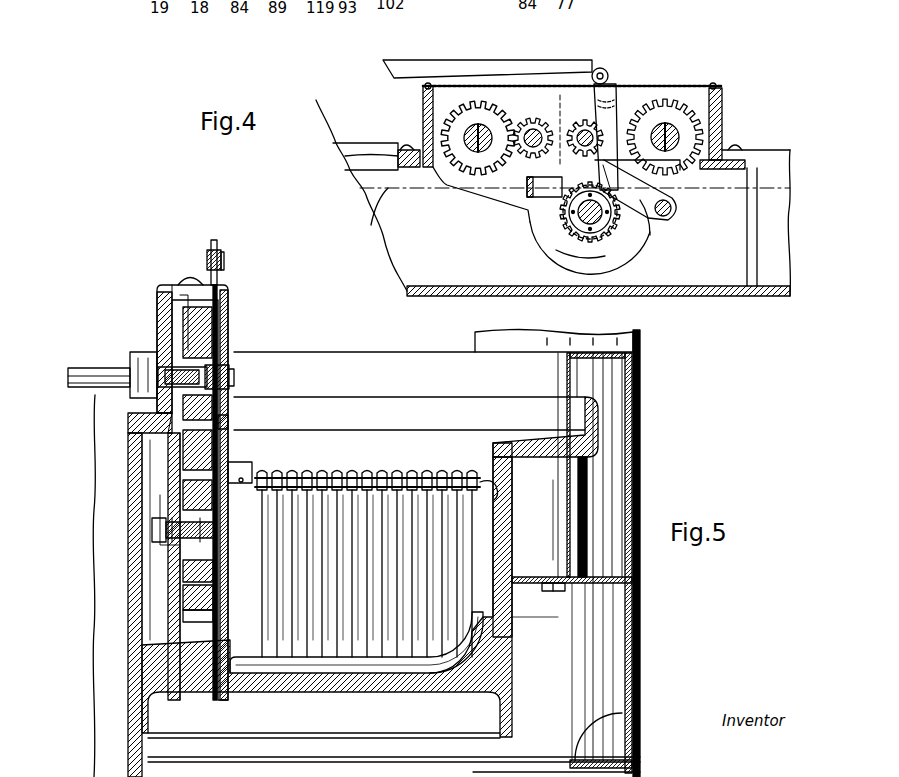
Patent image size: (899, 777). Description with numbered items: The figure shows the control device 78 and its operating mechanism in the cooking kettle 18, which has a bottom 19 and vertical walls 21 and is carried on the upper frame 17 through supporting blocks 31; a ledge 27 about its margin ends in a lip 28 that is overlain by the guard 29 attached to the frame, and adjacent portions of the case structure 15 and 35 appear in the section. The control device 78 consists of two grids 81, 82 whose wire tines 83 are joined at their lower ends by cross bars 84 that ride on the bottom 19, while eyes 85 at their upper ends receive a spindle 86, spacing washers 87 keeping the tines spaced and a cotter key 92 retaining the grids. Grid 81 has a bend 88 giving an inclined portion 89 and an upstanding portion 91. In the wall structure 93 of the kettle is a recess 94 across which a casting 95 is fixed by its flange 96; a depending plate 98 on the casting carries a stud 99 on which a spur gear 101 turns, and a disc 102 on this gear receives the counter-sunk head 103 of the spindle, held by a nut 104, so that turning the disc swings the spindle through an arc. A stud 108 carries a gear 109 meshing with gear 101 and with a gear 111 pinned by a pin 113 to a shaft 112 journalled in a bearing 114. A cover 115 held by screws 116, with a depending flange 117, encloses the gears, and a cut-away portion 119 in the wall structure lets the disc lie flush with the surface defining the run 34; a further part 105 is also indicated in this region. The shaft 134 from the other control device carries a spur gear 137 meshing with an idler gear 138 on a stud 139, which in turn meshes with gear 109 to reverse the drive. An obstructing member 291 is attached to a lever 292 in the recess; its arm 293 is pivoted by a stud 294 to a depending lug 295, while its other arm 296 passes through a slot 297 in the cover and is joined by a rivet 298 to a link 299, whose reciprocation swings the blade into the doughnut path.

In FIG. 5, the outer frame wall 15 is at (640, 373).
In FIG. 5, the upper frame 17 is at (585, 740).
In FIG. 4, the cooking kettle 18 is at (414, 290).
In FIG. 5, the cooking kettle 18 is at (128, 737).
In FIG. 4, the bottom 19 is at (760, 290).
In FIG. 5, the bottom 19 is at (378, 682).
In FIG. 5, the vertical walls 21 is at (512, 556).
In FIG. 5, the ledge 27 is at (590, 470).
In FIG. 5, the lip 28 is at (600, 414).
In FIG. 5, the guard 29 is at (565, 352).
In FIG. 5, the supporting blocks 31 is at (600, 512).
In FIG. 4, the run 34 is at (410, 264).
In FIG. 5, the run 34 is at (150, 648).
In FIG. 4, the side wall 35 is at (770, 234).
In FIG. 5, the side wall 35 is at (612, 610).
In FIG. 5, the control device 78 is at (436, 500).
In FIG. 5, the grid 81 is at (288, 630).
In FIG. 5, the grid 82 is at (262, 590).
In FIG. 5, the wire tines 83 is at (344, 600).
In FIG. 5, the cross bars 84 is at (425, 663).
In FIG. 5, the eyes 85 is at (390, 470).
In FIG. 5, the spindle 86 is at (500, 484).
In FIG. 5, the spacing washers 87 is at (422, 470).
In FIG. 5, the bend 88 is at (218, 668).
In FIG. 5, the inclined portion 89 is at (440, 590).
In FIG. 5, the upstanding portion 91 is at (448, 500).
In FIG. 5, the cotter key 92 is at (476, 470).
In FIG. 5, the wall structure 93 is at (130, 573).
In FIG. 4, the recess 94 is at (622, 236).
In FIG. 5, the recess 94 is at (150, 474).
In FIG. 4, the casting 95 is at (423, 116).
In FIG. 5, the casting 95 is at (157, 308).
In FIG. 4, the flange 96 is at (345, 158).
In FIG. 5, the flange 96 is at (128, 421).
In FIG. 4, the depending plate 98 is at (615, 190).
In FIG. 5, the depending plate 98 is at (170, 488).
In FIG. 4, the stud 99 is at (582, 216).
In FIG. 5, the stud 99 is at (160, 528).
In FIG. 4, the spur gear 101 is at (616, 232).
In FIG. 5, the spur gear 101 is at (185, 596).
In FIG. 5, the disc 102 is at (232, 424).
In FIG. 5, the counter-sunk head 103 is at (236, 446).
In FIG. 5, the nut 104 is at (252, 468).
In FIG. 4, the lever 105 is at (372, 222).
In FIG. 5, the lever 105 is at (496, 500).
In FIG. 4, the stud 108 is at (583, 130).
In FIG. 5, the stud 108 is at (230, 341).
In FIG. 4, the gear 109 is at (574, 108).
In FIG. 5, the gear 109 is at (208, 300).
In FIG. 4, the gear 111 is at (722, 140).
In FIG. 5, the gear 111 is at (212, 374).
In FIG. 4, the shaft 112 is at (690, 138).
In FIG. 5, the shaft 112 is at (75, 368).
In FIG. 4, the pin 113 is at (660, 92).
In FIG. 5, the bearing 114 is at (138, 352).
In FIG. 4, the cover 115 is at (470, 86).
In FIG. 5, the cover 115 is at (168, 285).
In FIG. 4, the screws 116 is at (424, 84).
In FIG. 5, the screws 116 is at (190, 277).
In FIG. 5, the depending flange 117 is at (232, 330).
In FIG. 4, the cut-away portion 119 is at (565, 268).
In FIG. 4, the shaft 134 is at (465, 136).
In FIG. 4, the spur gear 137 is at (462, 160).
In FIG. 4, the idler gear 138 is at (532, 116).
In FIG. 4, the stud 139 is at (528, 150).
In FIG. 4, the obstructing member 291 is at (532, 190).
In FIG. 4, the lever 292 is at (612, 135).
In FIG. 5, the lever 292 is at (222, 322).
In FIG. 4, the arm 293 is at (656, 232).
In FIG. 4, the stud 294 is at (670, 212).
In FIG. 4, the depending lug 295 is at (668, 200).
In FIG. 4, the arm 296 is at (612, 92).
In FIG. 5, the arm 296 is at (224, 282).
In FIG. 4, the slot 297 is at (666, 125).
In FIG. 5, the slot 297 is at (180, 298).
In FIG. 4, the rivet 298 is at (602, 67).
In FIG. 5, the rivet 298 is at (226, 256).
In FIG. 4, the link 299 is at (440, 70).
In FIG. 5, the link 299 is at (212, 244).